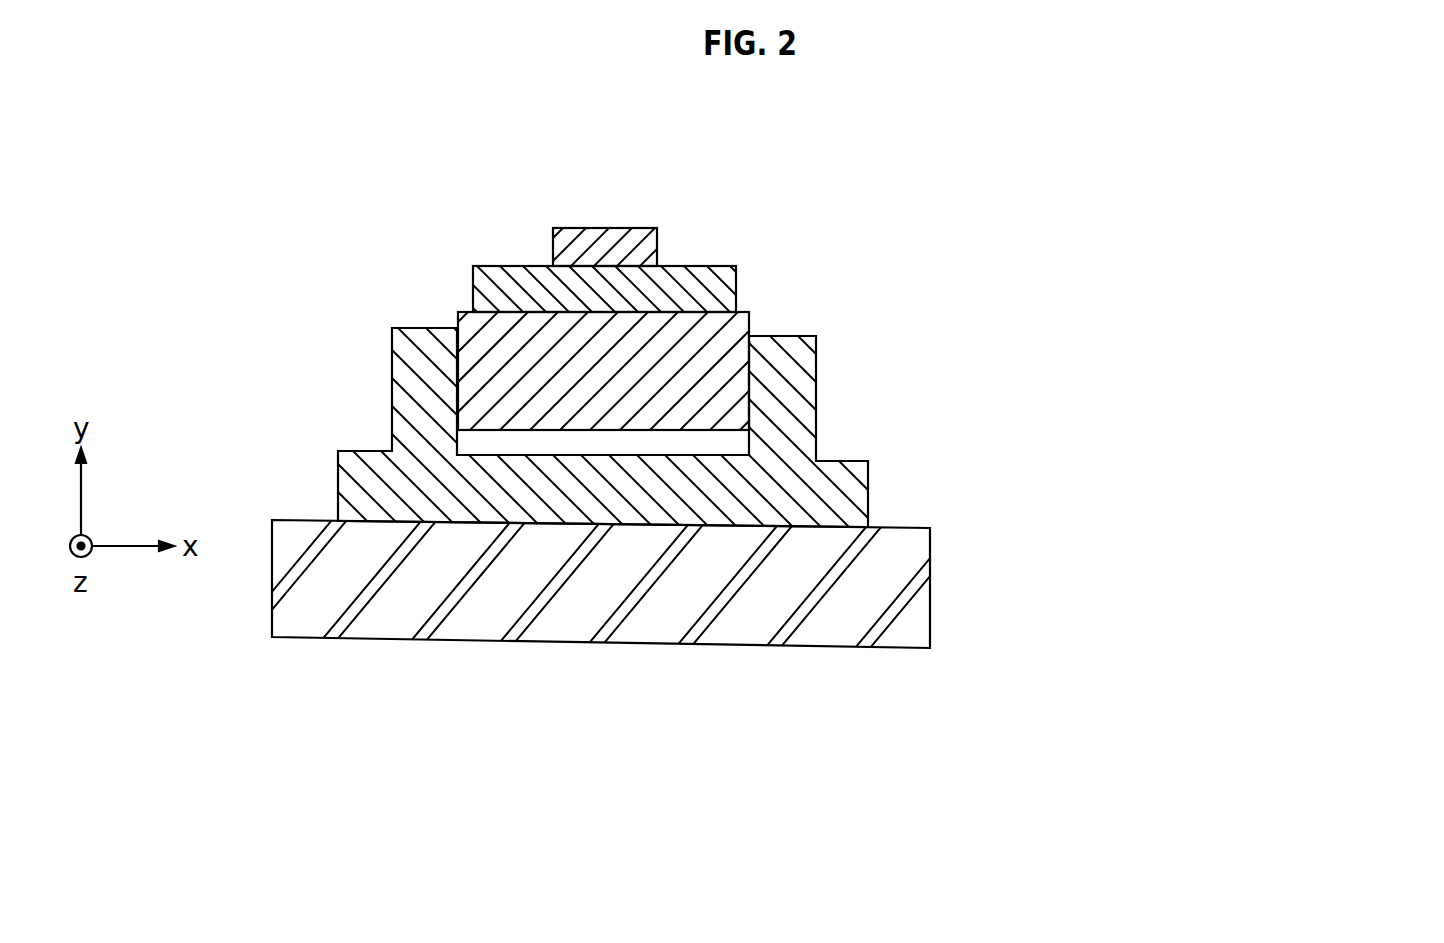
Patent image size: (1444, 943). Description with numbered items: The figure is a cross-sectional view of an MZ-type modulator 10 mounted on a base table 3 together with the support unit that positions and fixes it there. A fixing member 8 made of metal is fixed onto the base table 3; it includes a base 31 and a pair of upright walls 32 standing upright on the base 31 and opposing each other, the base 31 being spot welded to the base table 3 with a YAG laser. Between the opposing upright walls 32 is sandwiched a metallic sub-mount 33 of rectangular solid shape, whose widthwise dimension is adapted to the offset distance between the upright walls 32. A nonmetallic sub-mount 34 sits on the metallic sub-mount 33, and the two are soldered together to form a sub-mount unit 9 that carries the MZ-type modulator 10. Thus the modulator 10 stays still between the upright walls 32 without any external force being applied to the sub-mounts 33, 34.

The MZ-type modulator 10 is at (636, 252).
The nonmetallic sub-mount 34 is at (720, 286).
The metallic sub-mount 33 is at (728, 372).
The sub-mount unit 9 is at (858, 331).
The upright wall 32 is at (803, 381).
The base 31 is at (835, 475).
The fixing member 8 is at (791, 428).
The base table 3 is at (885, 572).